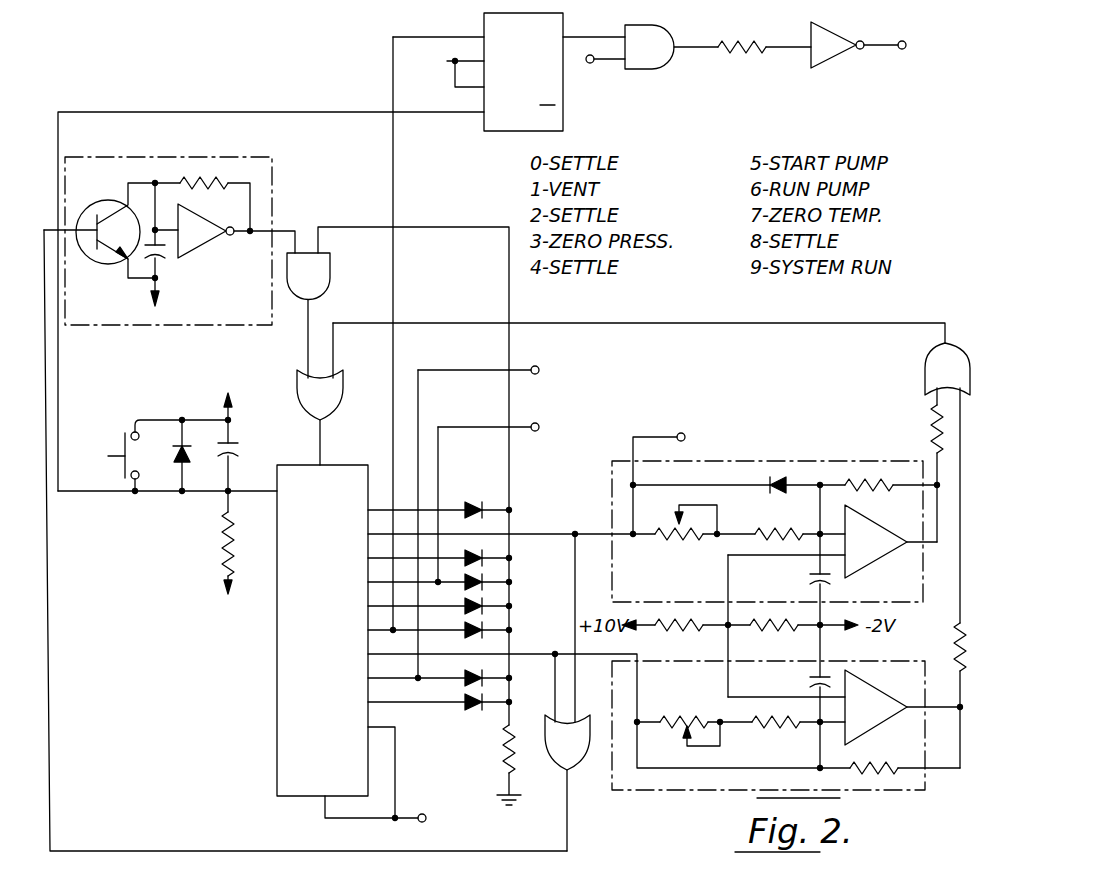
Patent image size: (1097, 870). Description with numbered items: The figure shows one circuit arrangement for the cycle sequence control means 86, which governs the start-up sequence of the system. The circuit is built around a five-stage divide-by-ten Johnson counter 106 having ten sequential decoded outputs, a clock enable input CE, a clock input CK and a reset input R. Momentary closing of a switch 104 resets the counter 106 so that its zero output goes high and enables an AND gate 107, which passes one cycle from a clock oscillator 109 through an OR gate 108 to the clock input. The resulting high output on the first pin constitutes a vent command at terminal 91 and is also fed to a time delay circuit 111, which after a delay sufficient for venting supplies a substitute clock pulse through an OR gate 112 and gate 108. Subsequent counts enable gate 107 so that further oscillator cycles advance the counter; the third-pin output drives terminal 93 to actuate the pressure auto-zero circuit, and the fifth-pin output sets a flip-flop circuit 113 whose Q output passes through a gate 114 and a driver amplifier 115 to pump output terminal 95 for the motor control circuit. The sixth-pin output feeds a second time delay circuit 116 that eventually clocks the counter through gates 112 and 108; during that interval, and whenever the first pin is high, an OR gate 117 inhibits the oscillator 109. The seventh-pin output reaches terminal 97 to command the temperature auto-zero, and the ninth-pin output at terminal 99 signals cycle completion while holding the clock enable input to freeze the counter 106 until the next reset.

The cycle sequence control means 86 is at (270, 111).
The clock oscillator 109 is at (236, 156).
The AND gate 107 is at (330, 280).
The OR gate 108 is at (336, 405).
The switch 104 is at (122, 440).
The Johnson counter 106 is at (277, 692).
The output terminal 99 is at (420, 815).
The output terminal 97 is at (536, 366).
The output terminal 93 is at (536, 423).
The output terminal 91 is at (684, 433).
The OR gate 117 is at (586, 758).
The flip-flop circuit 113 is at (497, 132).
The gate 114 is at (645, 69).
The driver amplifier 115 is at (826, 68).
The output terminal 95 is at (905, 42).
The OR gate 112 is at (925, 368).
The time delay circuit 111 is at (810, 461).
The time delay circuit 116 is at (698, 790).